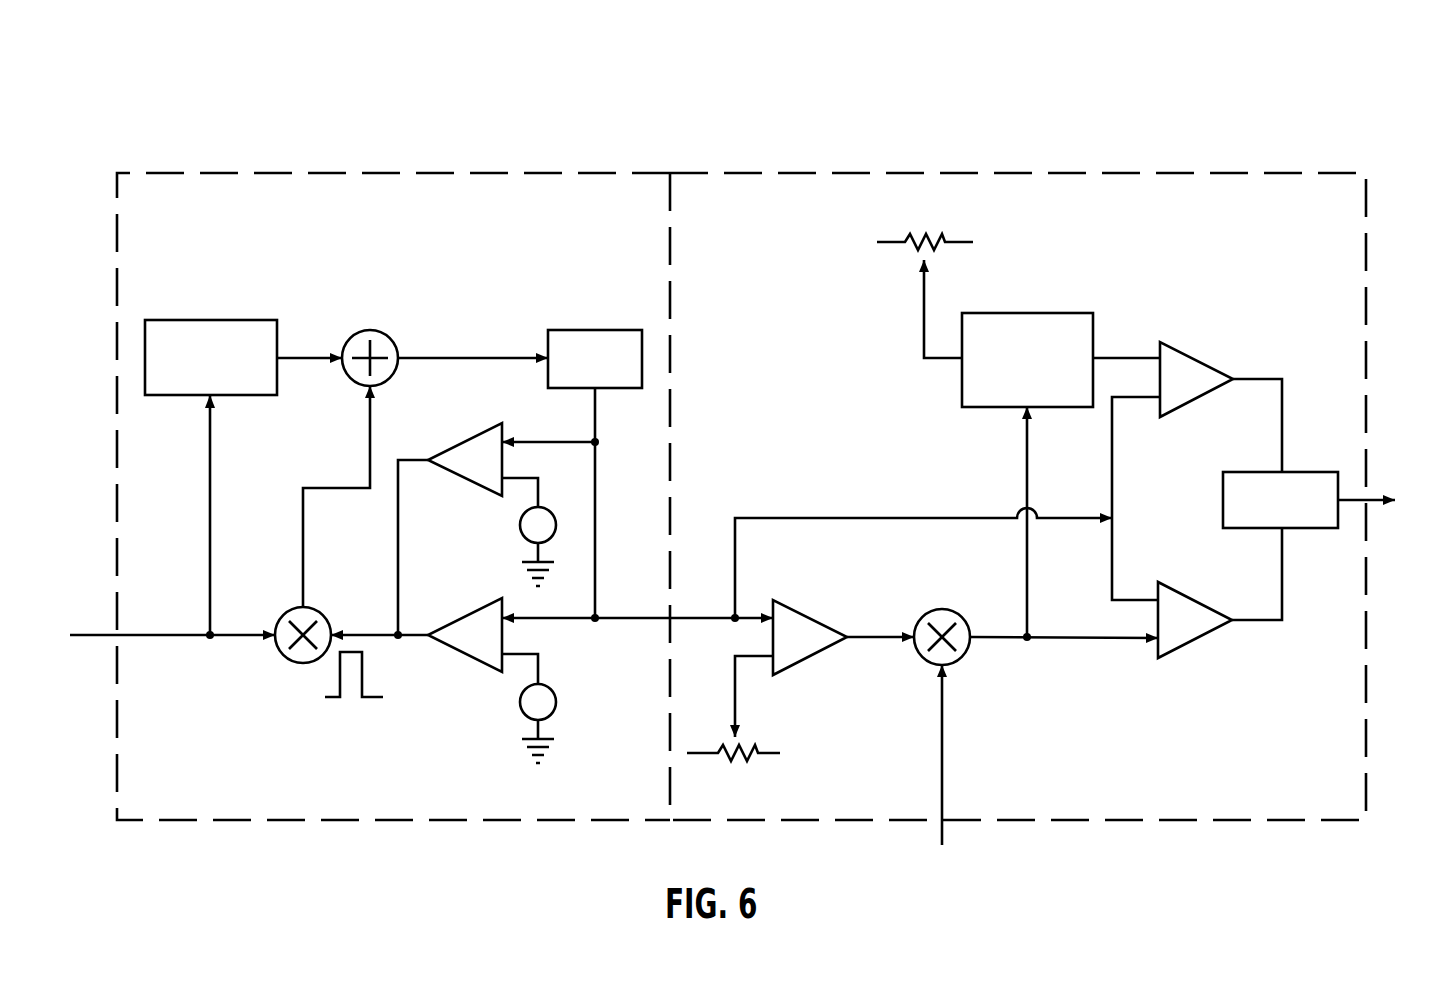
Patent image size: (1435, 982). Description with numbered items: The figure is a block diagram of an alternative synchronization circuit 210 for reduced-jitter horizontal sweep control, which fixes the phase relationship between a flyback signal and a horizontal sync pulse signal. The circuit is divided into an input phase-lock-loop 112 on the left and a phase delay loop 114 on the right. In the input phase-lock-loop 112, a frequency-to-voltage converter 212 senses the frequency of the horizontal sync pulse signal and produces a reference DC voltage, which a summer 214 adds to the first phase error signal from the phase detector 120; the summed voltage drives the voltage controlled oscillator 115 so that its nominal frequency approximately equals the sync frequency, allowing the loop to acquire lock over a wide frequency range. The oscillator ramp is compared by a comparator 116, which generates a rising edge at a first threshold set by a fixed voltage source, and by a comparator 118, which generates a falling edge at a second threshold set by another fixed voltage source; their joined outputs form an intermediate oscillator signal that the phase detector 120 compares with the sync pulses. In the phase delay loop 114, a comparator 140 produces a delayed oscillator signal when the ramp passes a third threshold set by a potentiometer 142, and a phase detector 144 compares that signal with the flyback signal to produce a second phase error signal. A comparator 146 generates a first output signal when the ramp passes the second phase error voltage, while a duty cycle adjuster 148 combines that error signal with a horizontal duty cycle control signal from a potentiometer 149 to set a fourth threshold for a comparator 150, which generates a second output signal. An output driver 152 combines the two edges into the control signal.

The synchronization circuit 210 is at (1075, 98).
The input phase-lock-loop 112 is at (452, 178).
The phase delay loop 114 is at (791, 178).
The frequency-to-voltage converter 212 is at (256, 318).
The summer 214 is at (376, 332).
The voltage controlled oscillator 115 is at (626, 332).
The comparator 118 is at (472, 475).
The comparator 116 is at (472, 648).
The phase detector 120 is at (293, 661).
The comparator 140 is at (807, 650).
The phase detector 144 is at (972, 650).
The potentiometer 142 is at (762, 755).
The duty cycle adjuster 148 is at (1075, 320).
The potentiometer 149 is at (898, 240).
The comparator 150 is at (1175, 400).
The output driver 152 is at (1322, 477).
The comparator 146 is at (1175, 638).